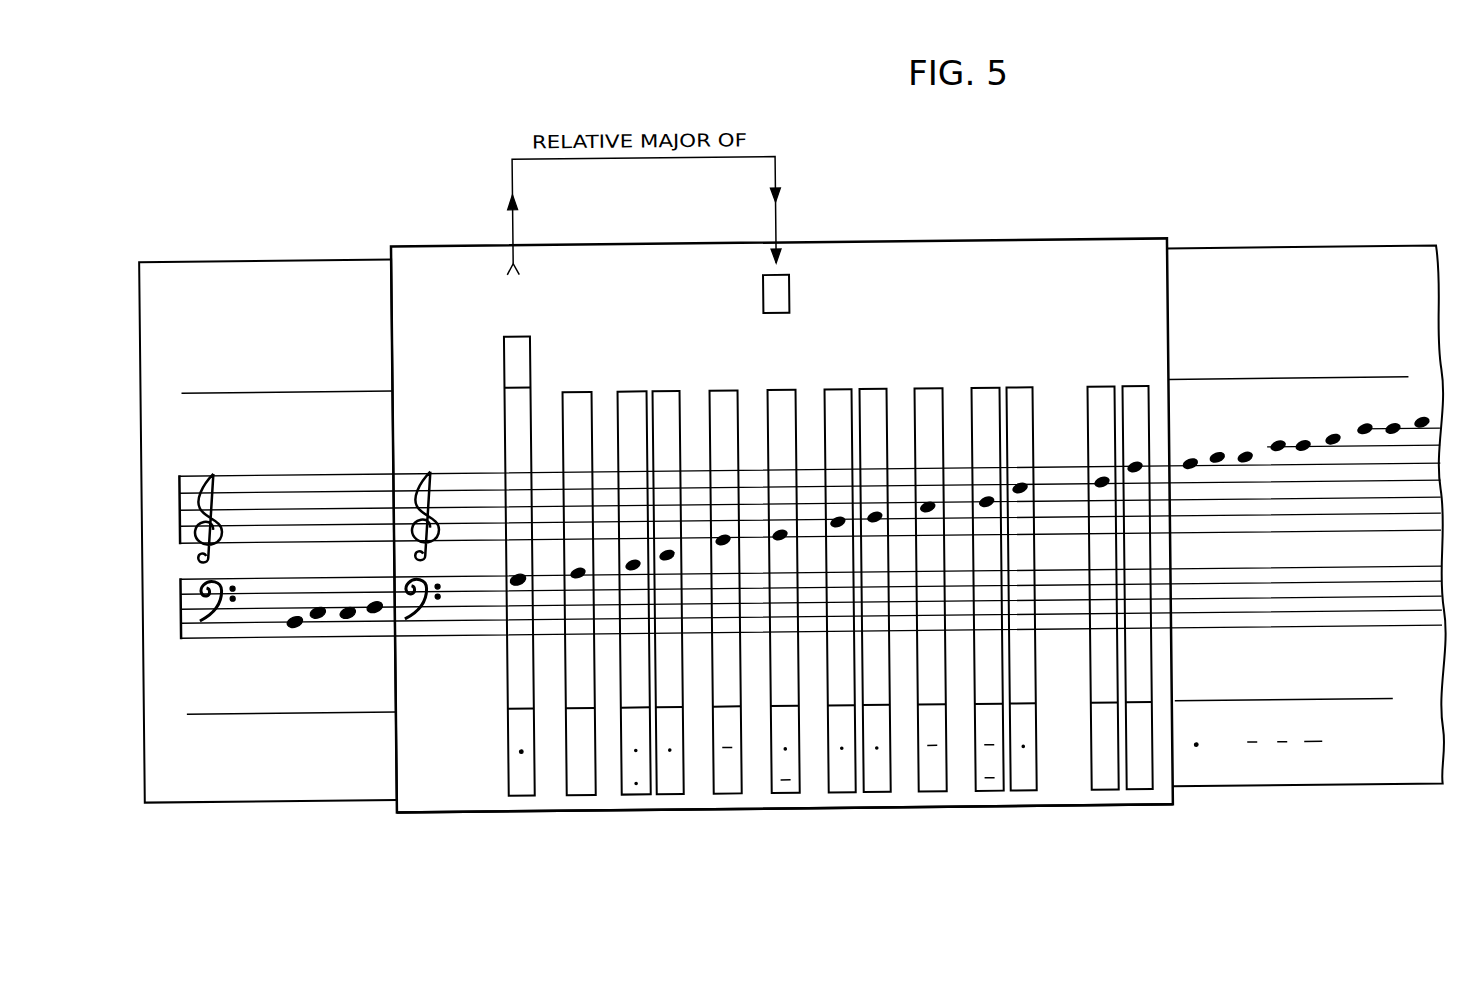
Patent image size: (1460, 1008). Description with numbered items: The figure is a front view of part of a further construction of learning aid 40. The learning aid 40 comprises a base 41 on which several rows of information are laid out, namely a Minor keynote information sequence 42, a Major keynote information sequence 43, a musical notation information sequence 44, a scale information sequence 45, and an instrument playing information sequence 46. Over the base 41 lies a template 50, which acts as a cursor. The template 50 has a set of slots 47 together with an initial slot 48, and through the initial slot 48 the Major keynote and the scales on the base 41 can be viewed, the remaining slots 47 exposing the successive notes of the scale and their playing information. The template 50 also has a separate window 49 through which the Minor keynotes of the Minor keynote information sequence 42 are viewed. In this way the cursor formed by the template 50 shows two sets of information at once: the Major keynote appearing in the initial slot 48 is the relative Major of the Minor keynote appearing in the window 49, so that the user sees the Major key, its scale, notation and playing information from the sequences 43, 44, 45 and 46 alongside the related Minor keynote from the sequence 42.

The learning aid 40 is at (795, 521).
The base 41 is at (1279, 262).
The Minor keynote information sequence 42 is at (229, 300).
The Major keynote information sequence 43 is at (250, 361).
The musical notation information sequence 44 is at (177, 518).
The scale information sequence 45 is at (197, 678).
The instrument playing information sequence 46 is at (236, 572).
The set of slots 47 is at (933, 396).
The initial slot 48 is at (519, 338).
The window 49 is at (769, 321).
The template 50 is at (454, 816).